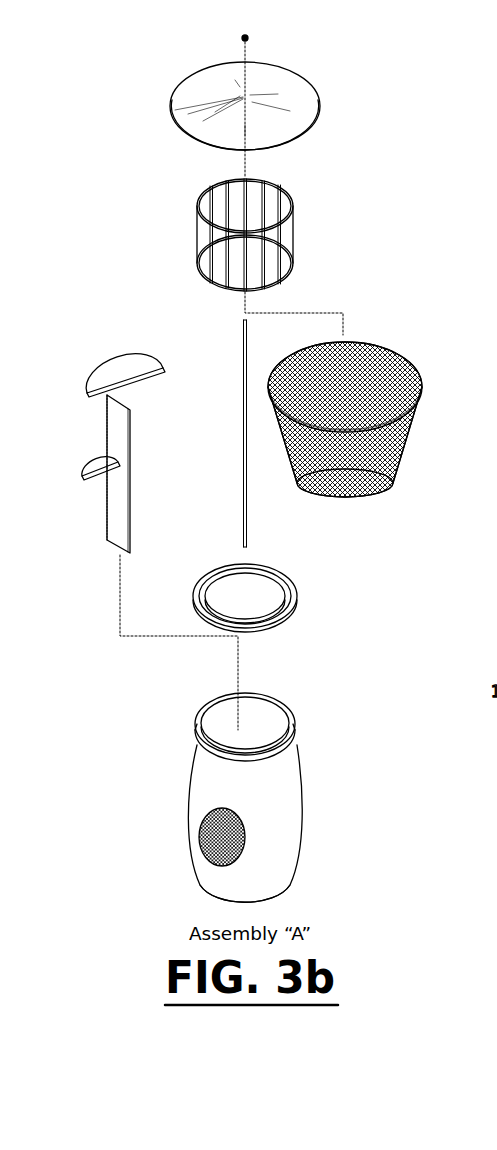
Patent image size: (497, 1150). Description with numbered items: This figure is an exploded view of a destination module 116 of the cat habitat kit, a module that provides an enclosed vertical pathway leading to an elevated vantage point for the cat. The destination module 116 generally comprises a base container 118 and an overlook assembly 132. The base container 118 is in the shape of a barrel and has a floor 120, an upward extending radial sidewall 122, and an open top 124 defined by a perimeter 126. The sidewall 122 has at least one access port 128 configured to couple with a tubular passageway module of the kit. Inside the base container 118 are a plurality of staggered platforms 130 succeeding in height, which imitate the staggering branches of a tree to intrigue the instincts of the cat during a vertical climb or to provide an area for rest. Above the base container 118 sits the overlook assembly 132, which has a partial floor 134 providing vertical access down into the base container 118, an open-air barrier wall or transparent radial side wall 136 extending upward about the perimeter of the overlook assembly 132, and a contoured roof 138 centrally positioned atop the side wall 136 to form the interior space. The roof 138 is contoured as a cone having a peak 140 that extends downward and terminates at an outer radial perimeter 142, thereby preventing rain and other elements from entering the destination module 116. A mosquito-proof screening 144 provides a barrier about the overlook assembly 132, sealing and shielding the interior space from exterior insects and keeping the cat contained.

The destination module 116 is at (129, 69).
The contoured roof 138 is at (300, 72).
The peak 140 is at (245, 92).
The outer radial perimeter 142 is at (320, 106).
The overlook assembly 132 is at (320, 170).
The transparent radial side wall 136 is at (292, 254).
The staggered platforms 130 is at (60, 444).
The partial floor 134 is at (105, 352).
The mosquito-proof screening 144 is at (388, 462).
The base container 118 is at (325, 785).
The perimeter 126 is at (210, 702).
The open top 124 is at (200, 738).
The sidewall 122 is at (303, 840).
The floor 120 is at (278, 899).
The access port 128 is at (215, 843).